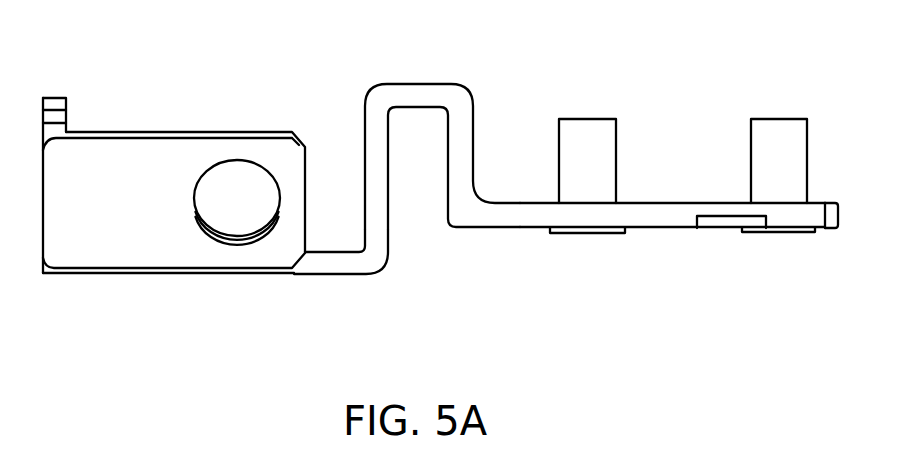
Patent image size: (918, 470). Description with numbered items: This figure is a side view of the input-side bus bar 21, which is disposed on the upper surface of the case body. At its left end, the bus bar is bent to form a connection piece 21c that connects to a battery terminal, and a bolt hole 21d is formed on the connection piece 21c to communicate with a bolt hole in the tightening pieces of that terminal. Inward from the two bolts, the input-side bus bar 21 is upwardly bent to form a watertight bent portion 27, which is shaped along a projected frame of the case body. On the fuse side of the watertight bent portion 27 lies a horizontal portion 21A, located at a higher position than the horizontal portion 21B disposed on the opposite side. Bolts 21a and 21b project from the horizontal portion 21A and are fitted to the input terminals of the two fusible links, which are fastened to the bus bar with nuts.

The input-side bus bar 21 is at (98, 105).
The connection piece 21c is at (128, 148).
The bolt hole 21d is at (233, 186).
The horizontal portion 21B is at (327, 275).
The watertight bent portion 27 is at (413, 92).
The horizontal portion 21A is at (507, 232).
The bolt 21a is at (557, 150).
The bolt 21b is at (748, 150).